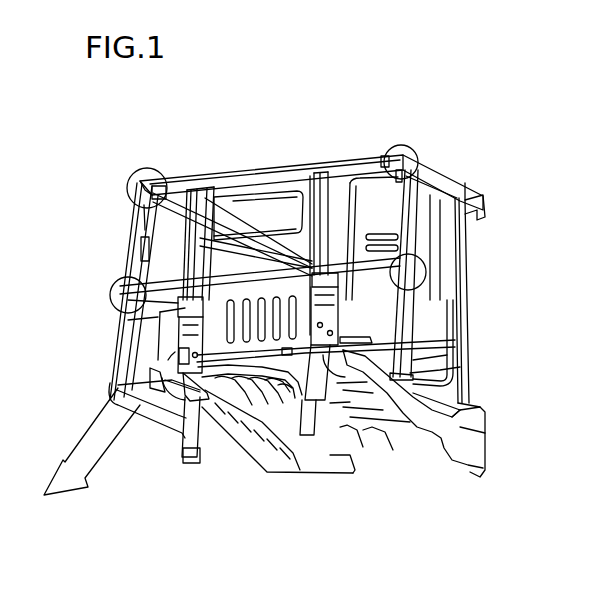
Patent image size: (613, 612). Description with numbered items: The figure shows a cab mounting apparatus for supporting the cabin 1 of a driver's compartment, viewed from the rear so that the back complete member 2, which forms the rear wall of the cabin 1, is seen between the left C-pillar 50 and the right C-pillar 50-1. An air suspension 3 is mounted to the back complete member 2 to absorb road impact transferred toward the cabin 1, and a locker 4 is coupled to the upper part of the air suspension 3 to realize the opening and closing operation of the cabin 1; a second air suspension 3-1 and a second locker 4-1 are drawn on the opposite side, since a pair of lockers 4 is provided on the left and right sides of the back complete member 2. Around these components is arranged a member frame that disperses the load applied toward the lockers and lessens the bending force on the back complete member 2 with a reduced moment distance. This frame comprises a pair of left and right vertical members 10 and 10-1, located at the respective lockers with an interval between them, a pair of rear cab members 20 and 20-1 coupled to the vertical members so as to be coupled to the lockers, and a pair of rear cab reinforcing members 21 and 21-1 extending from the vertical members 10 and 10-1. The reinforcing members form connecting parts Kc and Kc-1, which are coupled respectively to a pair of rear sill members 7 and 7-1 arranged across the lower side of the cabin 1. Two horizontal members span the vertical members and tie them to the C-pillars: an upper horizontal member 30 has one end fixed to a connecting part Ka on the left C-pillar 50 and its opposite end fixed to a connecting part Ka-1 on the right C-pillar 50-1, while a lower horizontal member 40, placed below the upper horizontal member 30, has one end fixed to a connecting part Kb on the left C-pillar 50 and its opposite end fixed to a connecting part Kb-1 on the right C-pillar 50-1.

The cabin 1 is at (466, 185).
The back complete member 2 is at (381, 277).
The air suspension 3 is at (175, 410).
The floor cross member 3-1 is at (345, 452).
The locker 4 is at (163, 374).
The right hinge bracket 4-1 is at (292, 415).
The rear sill member 7 is at (255, 418).
The rear sill member 7-1 is at (480, 462).
The left vertical member 10 is at (202, 213).
The right vertical member 10-1 is at (313, 180).
The rear cab member 20 is at (167, 350).
The rear cab member 20-1 is at (440, 315).
The rear cab reinforcing member 21 is at (180, 320).
The rear cab reinforcing member 21-1 is at (404, 350).
The upper horizontal member 30 is at (190, 182).
The lower horizontal member 40 is at (245, 277).
The left C-pillar 50 is at (128, 246).
The right C-pillar 50-1 is at (442, 238).
The connecting part Ka is at (132, 178).
The connecting part Ka-1 is at (402, 148).
The connecting part Kb is at (112, 292).
The connecting part Kb-1 is at (428, 272).
The connecting part Kc is at (212, 405).
The connecting part Kc-1 is at (452, 385).